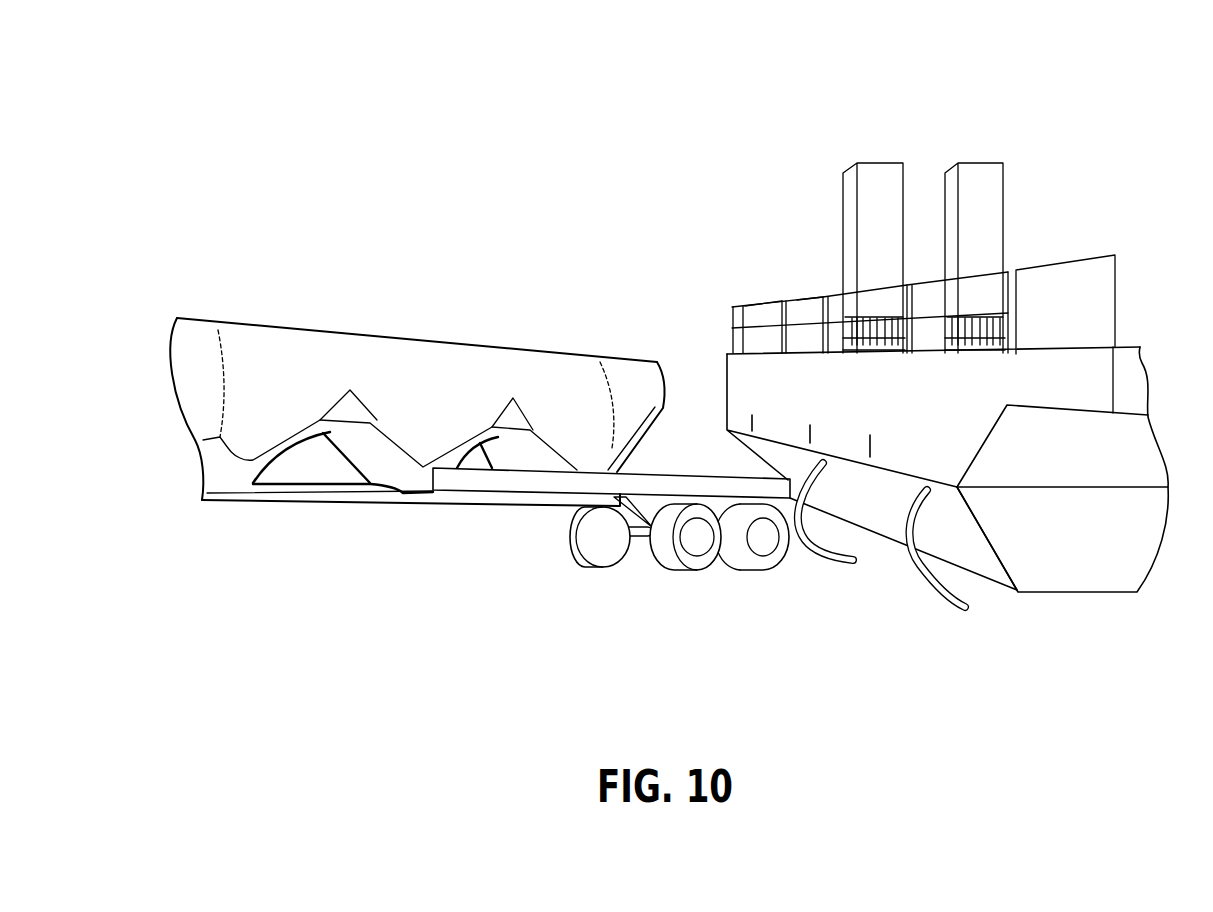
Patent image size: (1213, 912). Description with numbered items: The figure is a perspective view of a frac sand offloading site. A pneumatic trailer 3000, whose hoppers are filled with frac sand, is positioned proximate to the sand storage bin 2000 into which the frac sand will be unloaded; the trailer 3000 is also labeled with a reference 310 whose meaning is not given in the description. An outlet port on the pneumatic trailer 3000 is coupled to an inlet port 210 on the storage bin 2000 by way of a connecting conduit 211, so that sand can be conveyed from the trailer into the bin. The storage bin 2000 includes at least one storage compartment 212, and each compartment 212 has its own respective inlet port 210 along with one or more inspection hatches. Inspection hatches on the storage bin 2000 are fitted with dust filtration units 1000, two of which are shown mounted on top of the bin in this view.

The pneumatic trailer 3000 is at (557, 338).
The conveyor support structure 310 is at (575, 420).
The sand storage bin 2000 is at (916, 418).
The inlet port 210 is at (945, 472).
The storage compartment 212 is at (935, 400).
The connecting conduit 211 is at (930, 597).
The dust filtration unit 1000 is at (982, 150).